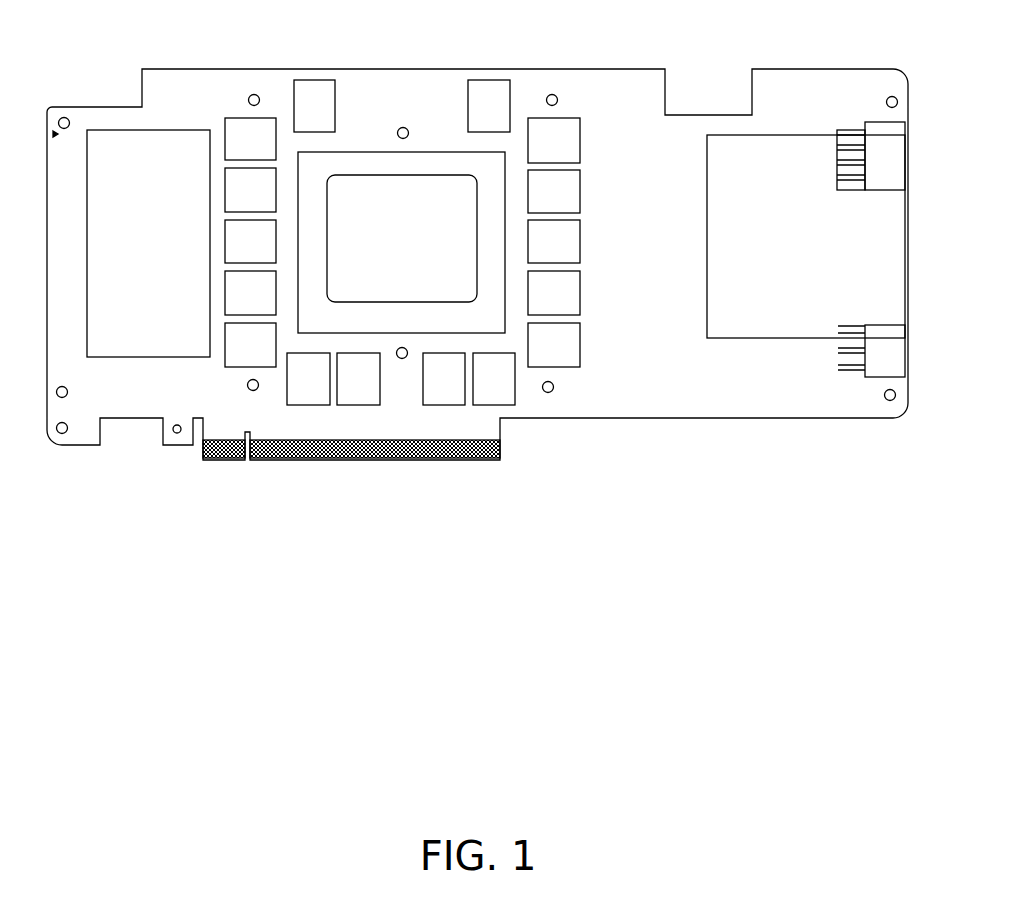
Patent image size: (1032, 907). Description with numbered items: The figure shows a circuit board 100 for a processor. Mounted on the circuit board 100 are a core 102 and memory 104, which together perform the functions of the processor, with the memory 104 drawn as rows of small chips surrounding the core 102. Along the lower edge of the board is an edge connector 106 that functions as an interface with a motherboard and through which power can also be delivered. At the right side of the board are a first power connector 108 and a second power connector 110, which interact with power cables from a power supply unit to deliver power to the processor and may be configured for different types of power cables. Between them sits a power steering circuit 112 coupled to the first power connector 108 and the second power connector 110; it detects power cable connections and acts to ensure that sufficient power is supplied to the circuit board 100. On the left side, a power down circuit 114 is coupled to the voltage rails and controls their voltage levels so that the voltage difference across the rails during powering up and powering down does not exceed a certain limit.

The circuit board 100 is at (455, 826).
The core 102 is at (385, 175).
The memory 104 is at (490, 80).
The edge connector 106 is at (325, 462).
The first power connector 108 is at (875, 122).
The second power connector 110 is at (870, 378).
The power steering circuit 112 is at (740, 135).
The power down circuit 114 is at (110, 130).